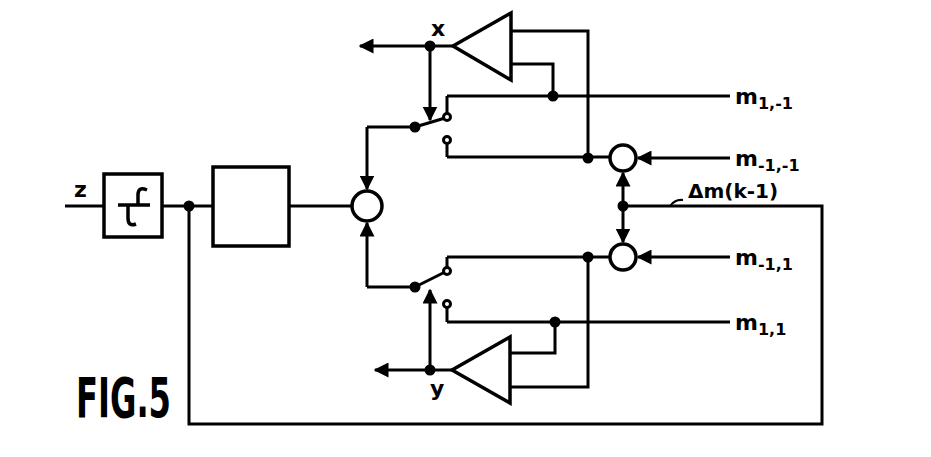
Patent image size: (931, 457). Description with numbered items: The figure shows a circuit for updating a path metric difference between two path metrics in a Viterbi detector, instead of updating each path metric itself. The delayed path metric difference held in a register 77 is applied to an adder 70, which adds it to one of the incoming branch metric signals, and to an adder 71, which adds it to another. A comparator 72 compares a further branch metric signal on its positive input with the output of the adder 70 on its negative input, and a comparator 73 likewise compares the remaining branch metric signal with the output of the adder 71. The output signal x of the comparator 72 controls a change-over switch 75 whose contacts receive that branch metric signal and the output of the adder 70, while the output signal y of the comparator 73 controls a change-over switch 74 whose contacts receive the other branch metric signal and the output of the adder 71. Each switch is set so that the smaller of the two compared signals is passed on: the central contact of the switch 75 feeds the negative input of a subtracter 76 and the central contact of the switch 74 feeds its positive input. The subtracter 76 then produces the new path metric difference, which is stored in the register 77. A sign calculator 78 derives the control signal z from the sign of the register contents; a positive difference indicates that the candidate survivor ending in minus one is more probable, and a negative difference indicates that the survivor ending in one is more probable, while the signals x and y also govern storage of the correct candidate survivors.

The adder 70 is at (620, 145).
The adder 71 is at (620, 271).
The comparator 72 is at (511, 49).
The comparator 73 is at (512, 400).
The change-over switch 74 is at (426, 280).
The change-over switch 75 is at (424, 118).
The subtracter 76 is at (382, 206).
The register 77 is at (270, 160).
The sign calculator 78 is at (138, 174).